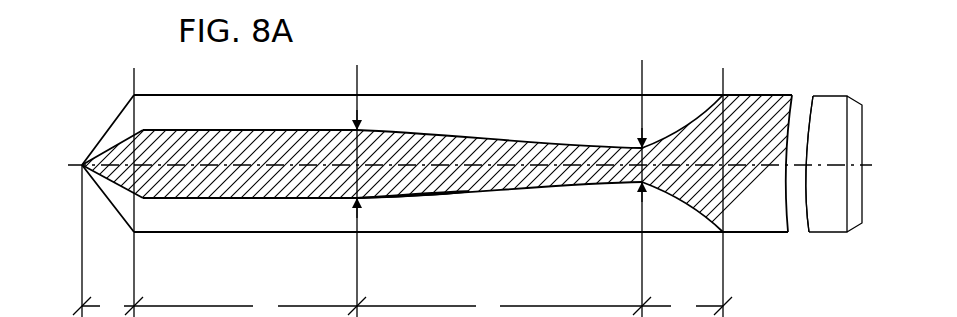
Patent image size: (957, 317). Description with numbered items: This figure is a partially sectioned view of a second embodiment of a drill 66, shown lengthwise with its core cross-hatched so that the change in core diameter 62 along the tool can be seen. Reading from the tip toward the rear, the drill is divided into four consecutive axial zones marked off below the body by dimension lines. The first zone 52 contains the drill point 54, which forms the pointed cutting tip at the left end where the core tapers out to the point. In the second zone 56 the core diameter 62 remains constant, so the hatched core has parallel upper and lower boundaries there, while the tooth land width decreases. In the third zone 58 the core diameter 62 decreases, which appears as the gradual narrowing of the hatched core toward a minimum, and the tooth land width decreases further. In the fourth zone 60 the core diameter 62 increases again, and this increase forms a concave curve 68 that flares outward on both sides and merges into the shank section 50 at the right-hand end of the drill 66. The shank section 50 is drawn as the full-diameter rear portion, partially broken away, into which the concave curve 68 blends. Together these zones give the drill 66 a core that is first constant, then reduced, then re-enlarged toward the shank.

The shank section 50 is at (831, 233).
The first zone 52 is at (100, 315).
The drill point 54 is at (82, 165).
The second zone 56 is at (253, 315).
The third zone 58 is at (476, 315).
The fourth zone 60 is at (671, 315).
The core diameter 62 is at (497, 177).
The drill 66 is at (810, 78).
The concave curve 68 is at (687, 126).